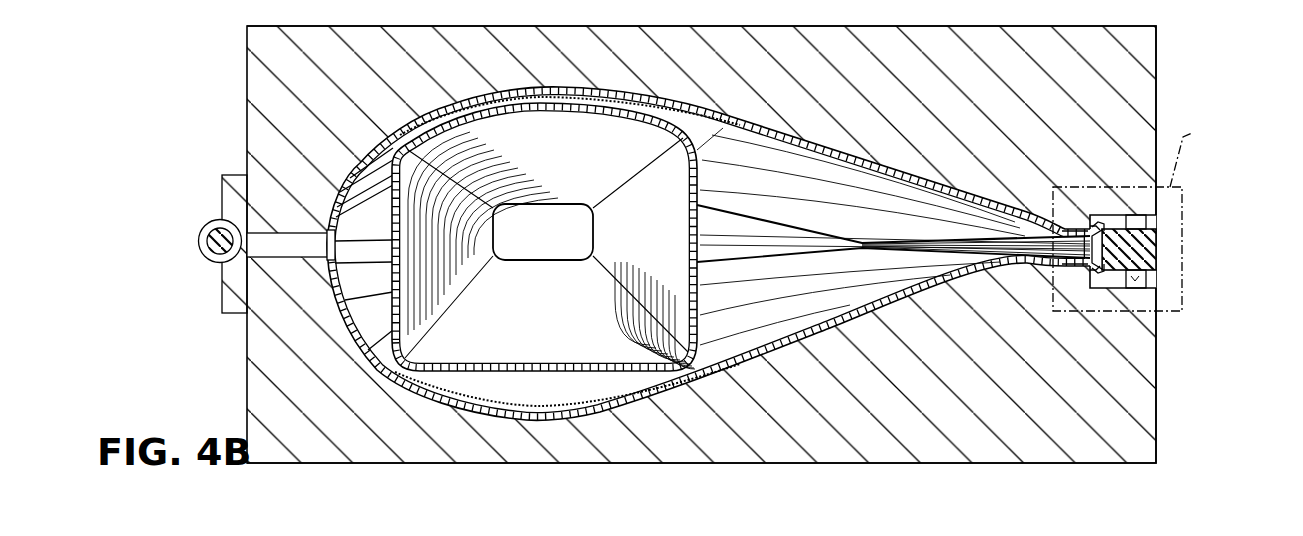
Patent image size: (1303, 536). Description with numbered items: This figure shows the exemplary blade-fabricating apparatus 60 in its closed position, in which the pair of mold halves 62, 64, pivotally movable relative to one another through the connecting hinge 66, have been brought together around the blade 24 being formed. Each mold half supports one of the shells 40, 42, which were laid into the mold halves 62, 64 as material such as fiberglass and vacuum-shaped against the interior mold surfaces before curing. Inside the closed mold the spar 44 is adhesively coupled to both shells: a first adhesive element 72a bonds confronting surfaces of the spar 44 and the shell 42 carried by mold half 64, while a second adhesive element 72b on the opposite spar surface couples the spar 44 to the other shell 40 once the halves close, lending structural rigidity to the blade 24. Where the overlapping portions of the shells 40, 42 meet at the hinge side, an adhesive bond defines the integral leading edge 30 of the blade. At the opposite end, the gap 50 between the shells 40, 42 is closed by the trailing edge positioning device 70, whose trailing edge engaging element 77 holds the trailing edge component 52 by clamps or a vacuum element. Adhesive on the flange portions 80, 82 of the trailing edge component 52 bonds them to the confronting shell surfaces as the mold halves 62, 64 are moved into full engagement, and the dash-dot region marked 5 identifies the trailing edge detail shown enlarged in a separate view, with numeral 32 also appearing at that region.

The apparatus 60 is at (233, 67).
The mold half 62 is at (1147, 50).
The mold half 64 is at (1147, 410).
The connecting hinge 66 is at (197, 242).
The leading edge 30 is at (304, 226).
The blade 24 is at (743, 104).
The shell 40 is at (794, 146).
The shell 42 is at (786, 340).
The spar 44 is at (698, 237).
The first adhesive element 72a is at (545, 408).
The second adhesive element 72b is at (578, 108).
The gap 50 is at (1078, 247).
The trailing edge component 52 is at (1084, 268).
The flange portion 80 is at (1093, 233).
The flange portion 82 is at (1082, 254).
The upper neck lip 32 is at (1107, 210).
The trailing edge engaging element 77 is at (1158, 236).
The trailing edge positioning device 70 is at (1197, 275).
The detail region of FIG. 5 is at (1136, 217).